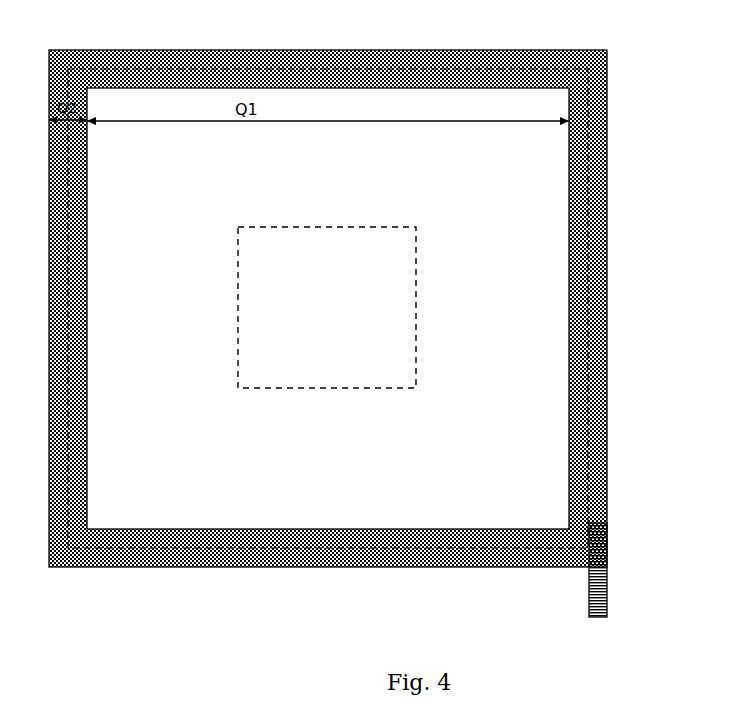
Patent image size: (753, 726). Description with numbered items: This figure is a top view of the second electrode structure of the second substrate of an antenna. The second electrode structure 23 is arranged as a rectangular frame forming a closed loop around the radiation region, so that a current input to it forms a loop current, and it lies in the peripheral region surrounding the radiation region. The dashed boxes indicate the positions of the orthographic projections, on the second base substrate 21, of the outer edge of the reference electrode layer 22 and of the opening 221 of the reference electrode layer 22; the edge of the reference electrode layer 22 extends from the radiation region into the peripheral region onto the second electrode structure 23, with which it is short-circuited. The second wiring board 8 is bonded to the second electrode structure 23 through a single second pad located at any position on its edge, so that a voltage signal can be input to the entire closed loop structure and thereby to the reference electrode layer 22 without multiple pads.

The second base substrate 21 is at (543, 187).
The reference electrode layer 22 is at (590, 273).
The second electrode structure 23 is at (605, 467).
The opening of the reference electrode layer 221 is at (378, 227).
The second wiring board 8 is at (589, 592).